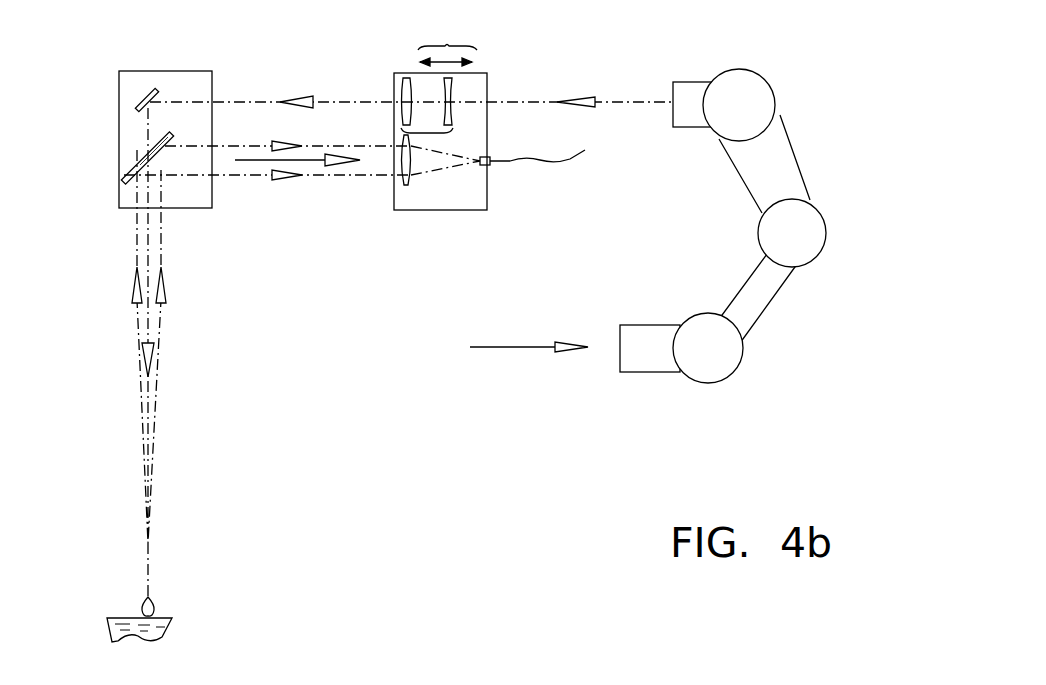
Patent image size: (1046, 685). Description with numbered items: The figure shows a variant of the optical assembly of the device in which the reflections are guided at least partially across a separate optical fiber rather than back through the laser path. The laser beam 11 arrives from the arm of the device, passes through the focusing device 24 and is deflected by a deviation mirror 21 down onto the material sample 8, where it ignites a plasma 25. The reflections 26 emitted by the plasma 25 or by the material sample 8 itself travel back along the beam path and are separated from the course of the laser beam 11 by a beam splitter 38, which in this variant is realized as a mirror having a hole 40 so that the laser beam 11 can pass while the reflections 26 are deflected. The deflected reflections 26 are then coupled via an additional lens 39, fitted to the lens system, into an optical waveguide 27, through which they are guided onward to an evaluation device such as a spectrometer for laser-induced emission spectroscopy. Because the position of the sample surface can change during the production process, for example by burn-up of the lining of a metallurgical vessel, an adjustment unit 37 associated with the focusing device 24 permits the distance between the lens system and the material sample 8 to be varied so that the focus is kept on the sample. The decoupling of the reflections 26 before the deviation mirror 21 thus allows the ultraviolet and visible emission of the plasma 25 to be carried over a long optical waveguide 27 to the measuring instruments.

The material sample 8 is at (158, 627).
The laser beam 11 is at (503, 348).
The deviation mirror 21 is at (144, 79).
The focusing device 24 is at (425, 133).
The plasma 25 is at (156, 600).
The reflections 26 is at (247, 176).
The optical waveguide 27 is at (573, 160).
The adjustment unit 37 is at (447, 40).
The beam splitter 38 is at (137, 168).
The additional lens 39 is at (403, 186).
The hole 40 is at (152, 160).